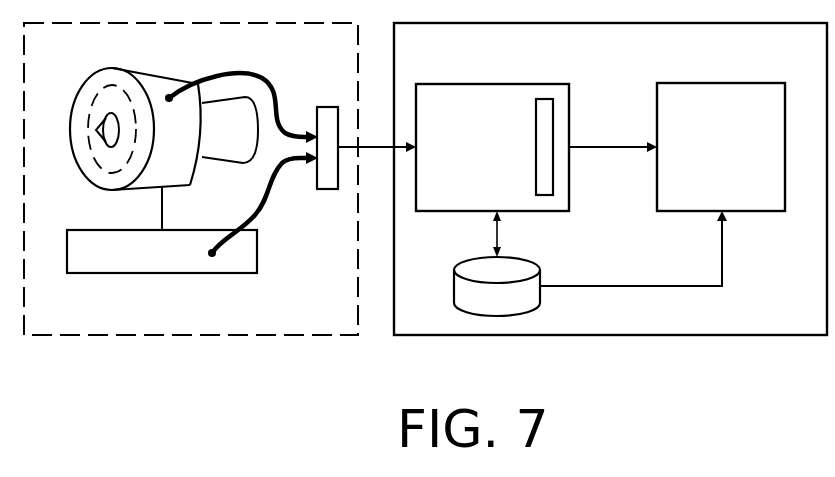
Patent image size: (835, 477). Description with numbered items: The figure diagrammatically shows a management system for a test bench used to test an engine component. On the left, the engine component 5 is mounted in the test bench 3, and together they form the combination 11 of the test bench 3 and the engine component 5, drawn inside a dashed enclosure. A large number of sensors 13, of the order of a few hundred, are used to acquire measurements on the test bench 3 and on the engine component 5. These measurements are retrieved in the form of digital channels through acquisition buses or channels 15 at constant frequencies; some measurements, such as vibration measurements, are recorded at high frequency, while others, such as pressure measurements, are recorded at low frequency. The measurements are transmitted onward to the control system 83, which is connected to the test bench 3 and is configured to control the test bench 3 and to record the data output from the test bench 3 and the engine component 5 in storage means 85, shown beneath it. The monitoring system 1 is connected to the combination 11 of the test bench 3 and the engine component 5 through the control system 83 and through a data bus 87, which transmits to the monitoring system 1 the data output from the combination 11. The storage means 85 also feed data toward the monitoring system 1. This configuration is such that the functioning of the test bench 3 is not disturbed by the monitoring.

The monitoring system 1 is at (708, 83).
The test bench 3 is at (128, 265).
The engine component 5 is at (83, 85).
The combination of the test bench and the engine component 11 is at (137, 337).
The sensors 13 is at (171, 97).
The acquisition buses or channels 15 is at (325, 189).
The control system 83 is at (440, 84).
The storage means 85 is at (541, 275).
The data bus 87 is at (545, 113).